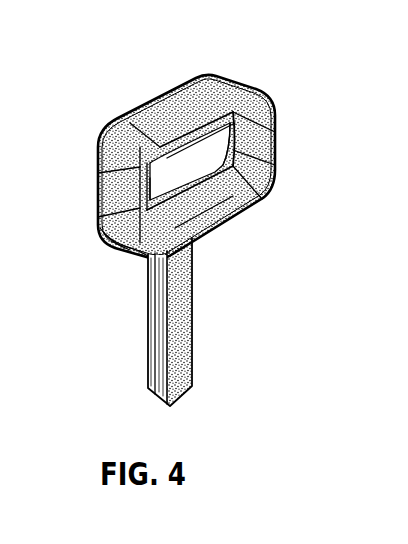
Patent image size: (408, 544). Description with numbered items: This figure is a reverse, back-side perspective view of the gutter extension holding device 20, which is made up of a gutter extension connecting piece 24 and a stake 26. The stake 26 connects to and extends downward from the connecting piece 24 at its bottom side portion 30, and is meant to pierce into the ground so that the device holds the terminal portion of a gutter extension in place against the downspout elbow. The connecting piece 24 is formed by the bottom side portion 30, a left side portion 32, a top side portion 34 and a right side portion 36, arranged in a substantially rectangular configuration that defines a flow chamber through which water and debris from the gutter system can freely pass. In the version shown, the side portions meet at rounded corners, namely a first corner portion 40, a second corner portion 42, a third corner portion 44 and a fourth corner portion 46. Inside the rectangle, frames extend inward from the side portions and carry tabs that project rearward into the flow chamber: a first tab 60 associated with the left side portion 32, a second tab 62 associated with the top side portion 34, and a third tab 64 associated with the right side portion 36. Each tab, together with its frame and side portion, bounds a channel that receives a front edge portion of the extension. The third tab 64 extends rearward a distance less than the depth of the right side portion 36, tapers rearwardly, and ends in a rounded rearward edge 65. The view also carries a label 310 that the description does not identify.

The gutter extension holding device 20 is at (248, 45).
The gutter extension connecting piece 24 is at (285, 62).
The stake 26 is at (133, 393).
The bottom side portion 30 is at (207, 203).
The left side portion 32 is at (97, 224).
The top side portion 34 is at (158, 112).
The right side portion 36 is at (291, 126).
The first corner portion 40 is at (140, 253).
The second corner portion 42 is at (110, 134).
The third corner portion 44 is at (237, 80).
The fourth corner portion 46 is at (259, 183).
The first tab 60 is at (192, 151).
The second tab 62 is at (160, 179).
The third tab 64 is at (275, 164).
The rearward edge 65 is at (277, 139).
The rear wall of opening 310 is at (197, 186).